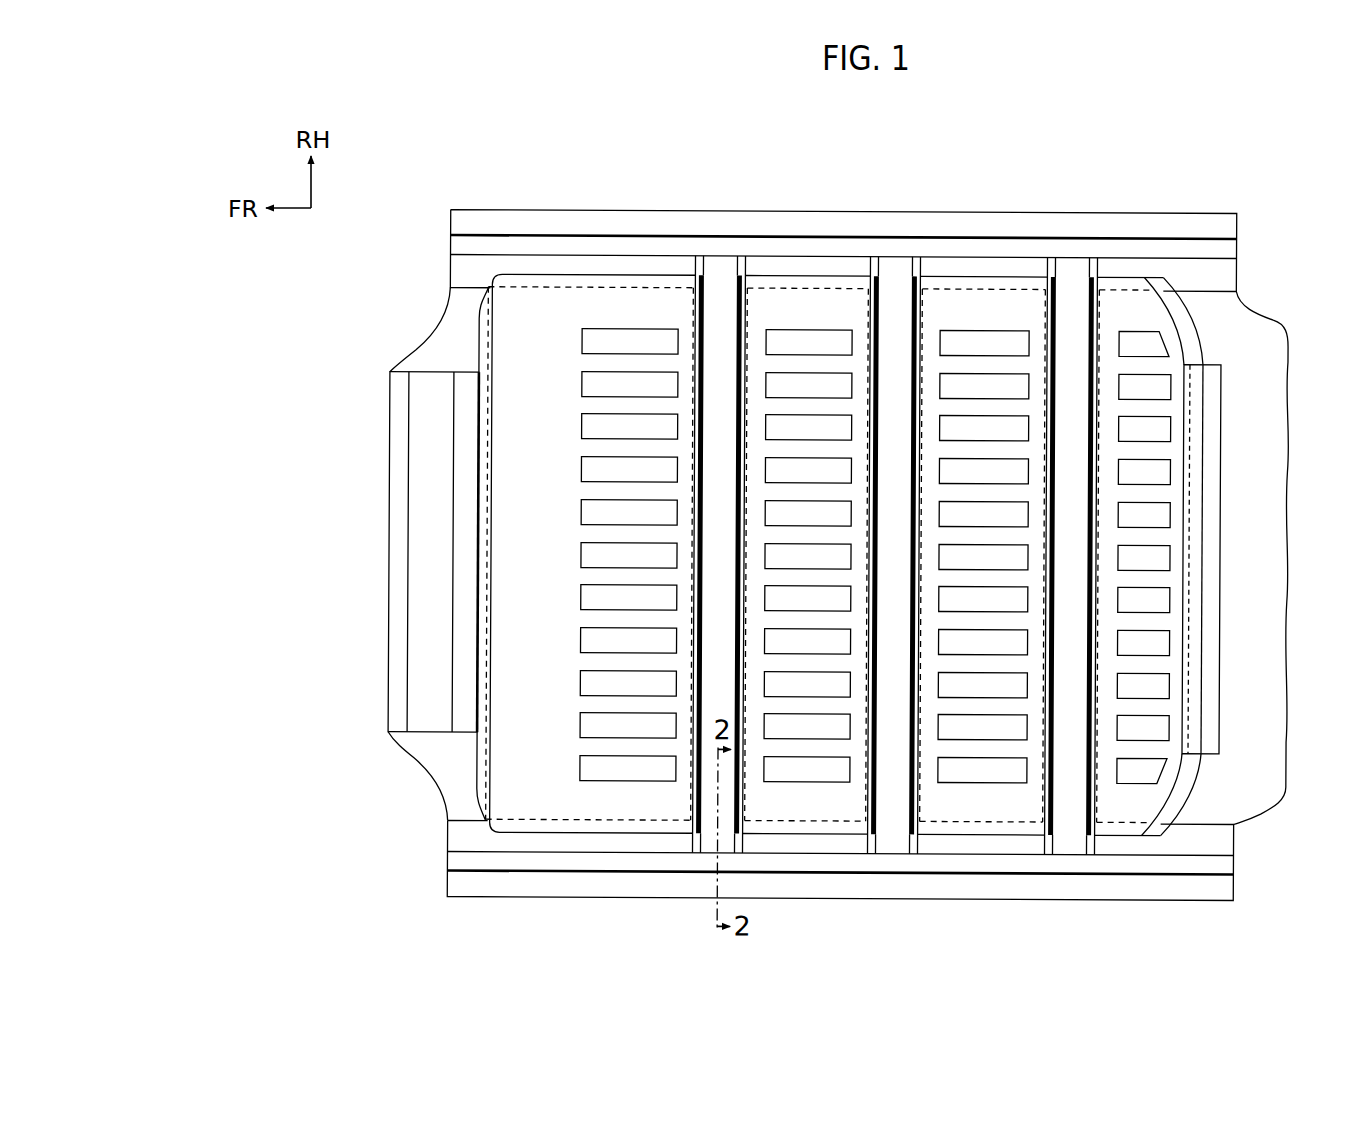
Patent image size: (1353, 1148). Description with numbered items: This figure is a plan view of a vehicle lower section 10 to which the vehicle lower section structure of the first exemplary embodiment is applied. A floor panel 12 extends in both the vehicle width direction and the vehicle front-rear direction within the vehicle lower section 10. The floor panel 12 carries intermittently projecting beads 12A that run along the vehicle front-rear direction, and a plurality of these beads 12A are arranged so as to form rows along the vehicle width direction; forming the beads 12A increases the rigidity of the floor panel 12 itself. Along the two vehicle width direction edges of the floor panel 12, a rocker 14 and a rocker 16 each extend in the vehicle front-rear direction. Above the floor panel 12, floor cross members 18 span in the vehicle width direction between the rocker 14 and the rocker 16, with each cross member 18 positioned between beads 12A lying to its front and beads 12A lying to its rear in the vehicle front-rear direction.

The vehicle lower section 10 is at (1283, 187).
The floor panel 12 is at (955, 273).
The beads 12A is at (594, 341).
The rocker 14 is at (634, 901).
The rocker 16 is at (705, 207).
The floor cross member 18 is at (727, 315).